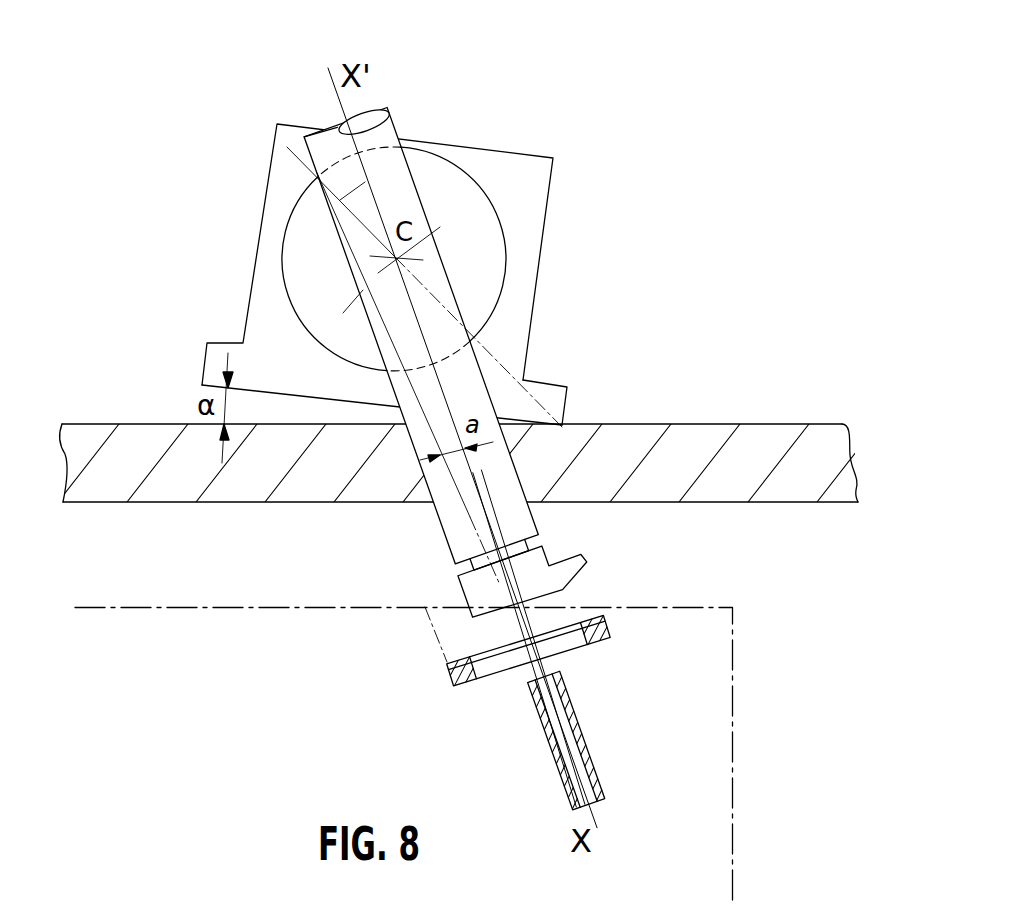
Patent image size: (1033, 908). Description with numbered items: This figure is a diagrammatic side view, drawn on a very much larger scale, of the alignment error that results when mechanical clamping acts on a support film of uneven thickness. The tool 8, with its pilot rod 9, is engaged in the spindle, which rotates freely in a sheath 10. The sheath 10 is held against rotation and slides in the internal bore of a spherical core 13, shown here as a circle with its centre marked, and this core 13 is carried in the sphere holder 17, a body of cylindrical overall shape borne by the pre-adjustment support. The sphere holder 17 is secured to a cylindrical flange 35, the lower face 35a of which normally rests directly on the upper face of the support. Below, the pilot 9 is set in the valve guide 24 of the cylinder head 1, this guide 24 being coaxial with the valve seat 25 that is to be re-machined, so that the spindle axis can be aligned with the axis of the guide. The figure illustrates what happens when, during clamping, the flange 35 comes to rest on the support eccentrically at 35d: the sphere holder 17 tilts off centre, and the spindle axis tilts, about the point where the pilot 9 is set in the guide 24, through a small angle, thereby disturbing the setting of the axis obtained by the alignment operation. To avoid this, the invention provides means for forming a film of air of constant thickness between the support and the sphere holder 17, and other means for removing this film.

The cylinder head 1 is at (712, 720).
The tool 8 is at (587, 567).
The pilot rod 9 is at (558, 720).
The sheath 10 is at (447, 530).
The spherical core 13 is at (488, 227).
The sphere holder 17 is at (528, 243).
The valve guide 24 is at (587, 768).
The valve seat 25 is at (610, 610).
The cylindrical flange 35 is at (543, 397).
The lower face of the flange 35a is at (288, 397).
The eccentric resting point of the flange 35d is at (567, 420).